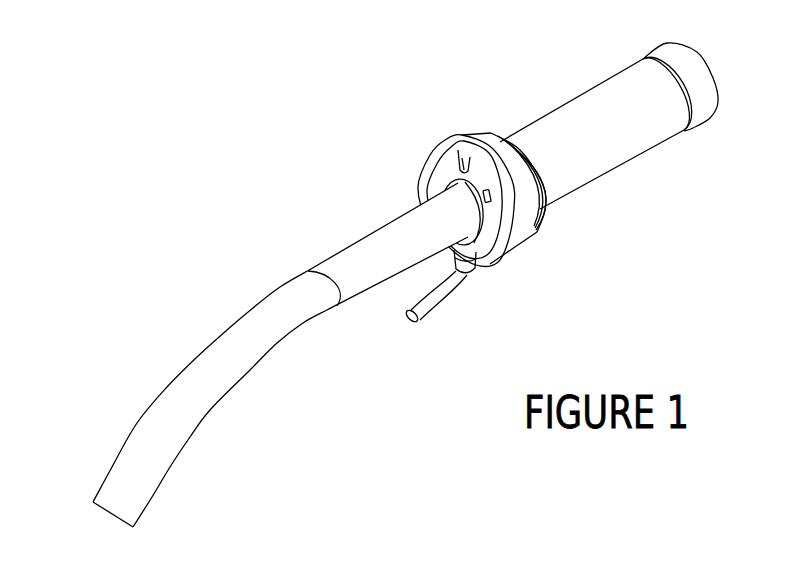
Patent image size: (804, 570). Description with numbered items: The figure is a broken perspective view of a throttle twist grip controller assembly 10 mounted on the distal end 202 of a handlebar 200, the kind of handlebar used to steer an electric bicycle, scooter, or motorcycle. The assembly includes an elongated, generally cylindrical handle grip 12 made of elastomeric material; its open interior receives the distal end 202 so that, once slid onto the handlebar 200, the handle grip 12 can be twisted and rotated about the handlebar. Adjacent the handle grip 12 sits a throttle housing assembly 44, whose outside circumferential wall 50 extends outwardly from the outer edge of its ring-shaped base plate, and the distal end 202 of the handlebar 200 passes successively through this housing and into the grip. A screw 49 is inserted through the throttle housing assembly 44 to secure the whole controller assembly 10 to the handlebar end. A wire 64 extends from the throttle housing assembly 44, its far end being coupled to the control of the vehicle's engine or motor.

The throttle twist grip controller assembly 10 is at (609, 135).
The handle grip 12 is at (637, 162).
The throttle housing assembly 44 is at (452, 128).
The screw 49 is at (470, 153).
The outside circumferential wall 50 is at (520, 232).
The wire 64 is at (438, 318).
The handlebar 200 is at (243, 303).
The distal end 202 is at (435, 203).